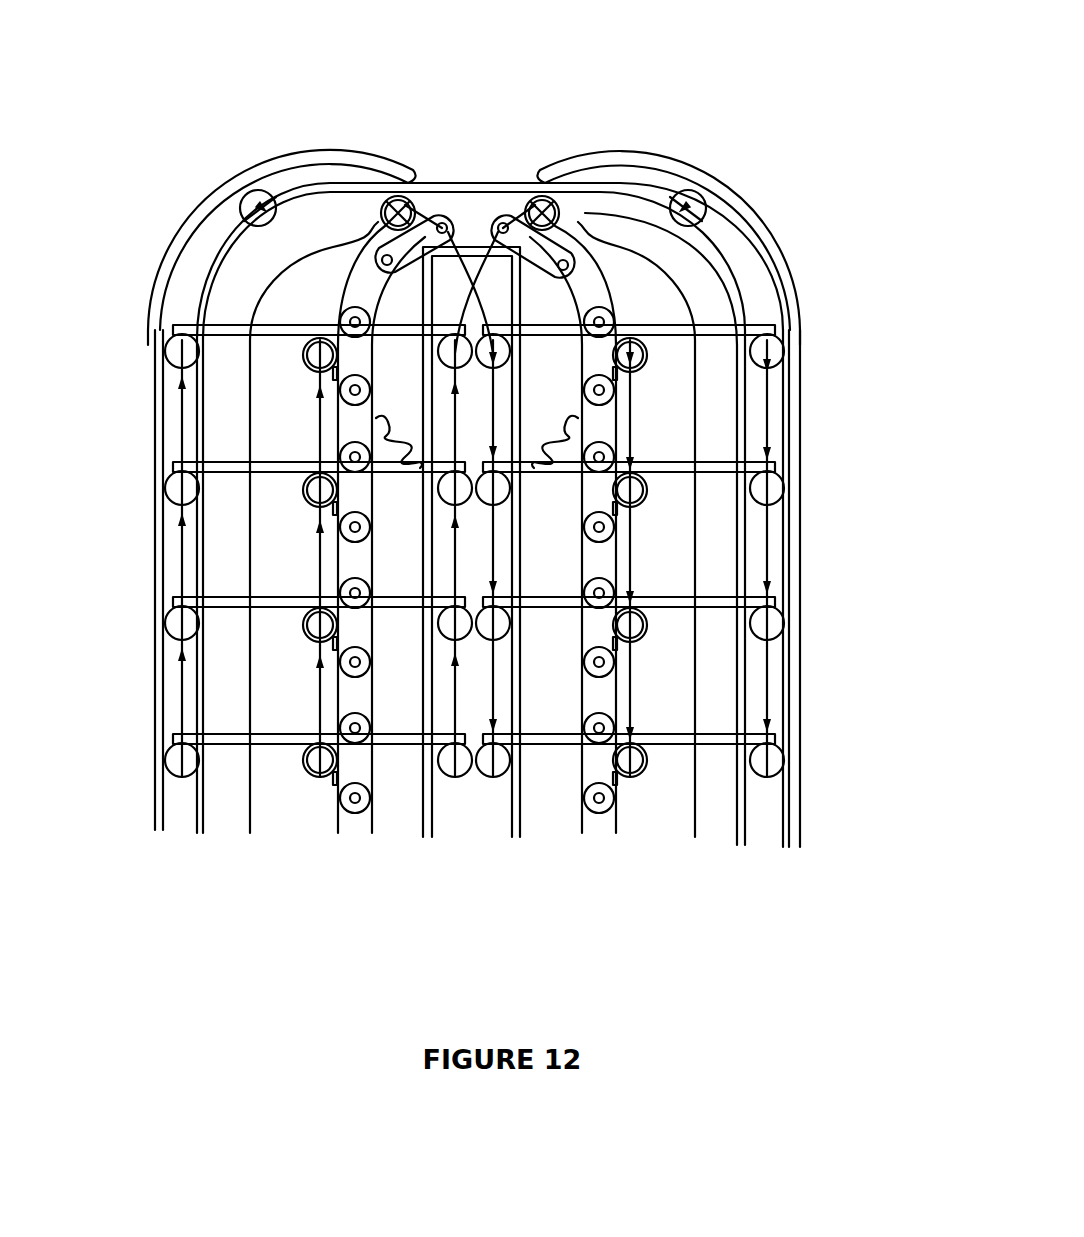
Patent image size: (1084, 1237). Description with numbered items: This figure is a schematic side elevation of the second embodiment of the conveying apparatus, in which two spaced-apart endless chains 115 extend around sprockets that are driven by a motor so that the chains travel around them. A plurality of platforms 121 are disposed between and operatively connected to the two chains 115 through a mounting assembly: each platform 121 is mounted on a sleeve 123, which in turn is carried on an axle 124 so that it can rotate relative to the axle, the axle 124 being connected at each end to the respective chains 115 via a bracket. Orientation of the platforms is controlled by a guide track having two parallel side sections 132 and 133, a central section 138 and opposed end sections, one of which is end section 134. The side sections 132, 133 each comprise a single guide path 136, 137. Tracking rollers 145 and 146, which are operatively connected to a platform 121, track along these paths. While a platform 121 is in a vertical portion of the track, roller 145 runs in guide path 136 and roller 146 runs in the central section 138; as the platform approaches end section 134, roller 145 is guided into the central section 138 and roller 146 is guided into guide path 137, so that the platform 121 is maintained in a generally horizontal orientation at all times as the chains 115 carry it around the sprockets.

The end section 134 is at (558, 152).
The side section 133 is at (800, 530).
The side section 132 is at (158, 643).
The guide path 136 is at (183, 795).
The guide path 137 is at (773, 812).
The chain 115 is at (355, 767).
The platform 121 is at (283, 742).
The central section 138 is at (462, 790).
The tracking roller 145 is at (493, 757).
The tracking roller 146 is at (777, 747).
The axle 124 is at (635, 768).
The sleeve 123 is at (650, 770).